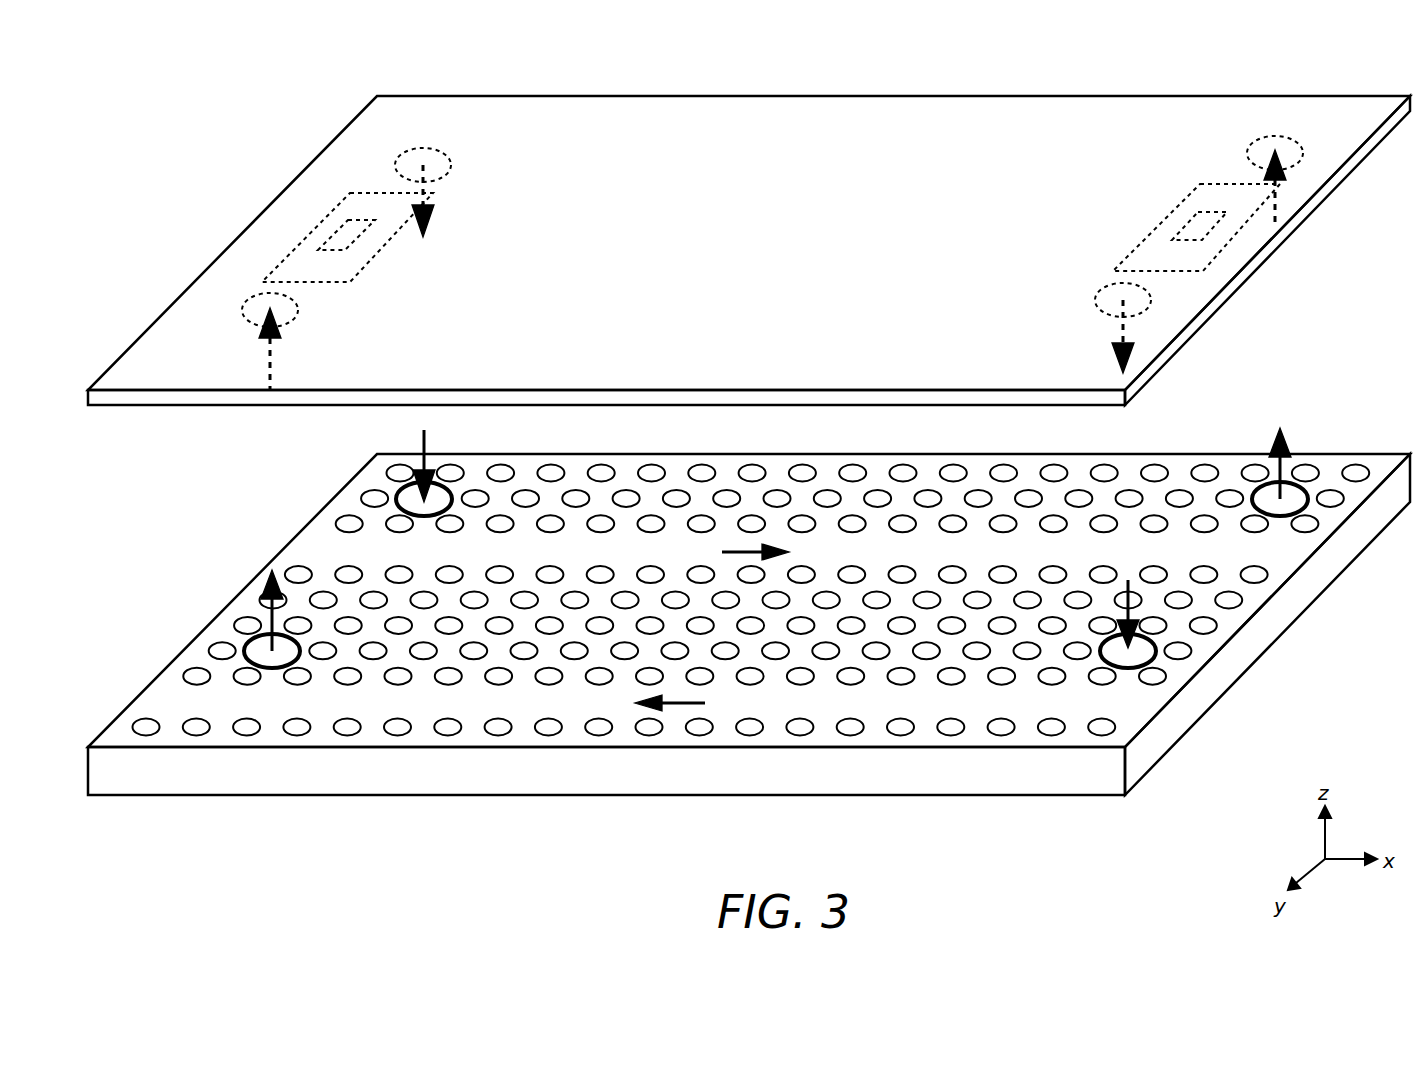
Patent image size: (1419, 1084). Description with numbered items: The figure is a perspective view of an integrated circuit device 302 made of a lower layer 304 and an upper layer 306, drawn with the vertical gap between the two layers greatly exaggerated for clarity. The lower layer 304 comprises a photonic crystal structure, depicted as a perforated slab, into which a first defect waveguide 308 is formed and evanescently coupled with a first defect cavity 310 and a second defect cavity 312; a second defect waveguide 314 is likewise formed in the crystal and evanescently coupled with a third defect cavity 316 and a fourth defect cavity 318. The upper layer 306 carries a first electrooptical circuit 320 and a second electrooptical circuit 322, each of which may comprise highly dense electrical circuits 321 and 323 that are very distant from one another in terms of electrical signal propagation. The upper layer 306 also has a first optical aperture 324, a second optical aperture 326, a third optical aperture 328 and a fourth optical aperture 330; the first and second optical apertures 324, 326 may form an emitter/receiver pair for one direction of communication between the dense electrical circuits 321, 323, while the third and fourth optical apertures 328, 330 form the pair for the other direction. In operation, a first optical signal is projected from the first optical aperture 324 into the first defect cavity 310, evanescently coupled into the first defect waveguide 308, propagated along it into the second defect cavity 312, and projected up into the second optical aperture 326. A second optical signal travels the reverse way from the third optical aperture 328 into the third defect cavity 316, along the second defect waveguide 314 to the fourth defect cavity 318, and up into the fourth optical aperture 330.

The integrated circuit device 302 is at (170, 186).
The lower layer 304 is at (1143, 758).
The upper layer 306 is at (1317, 207).
The first defect waveguide 308 is at (1283, 553).
The first defect cavity 310 is at (397, 492).
The second defect cavity 312 is at (1300, 480).
The second defect waveguide 314 is at (1133, 702).
The third defect cavity 316 is at (1153, 638).
The fourth defect cavity 318 is at (243, 642).
The first electrooptical circuit 320 is at (362, 268).
The dense electrical circuit 321 is at (363, 235).
The second electrooptical circuit 322 is at (1188, 195).
The dense electrical circuit 323 is at (1185, 227).
The first optical aperture 324 is at (448, 168).
The second optical aperture 326 is at (1250, 148).
The third optical aperture 328 is at (1097, 293).
The fourth optical aperture 330 is at (298, 310).